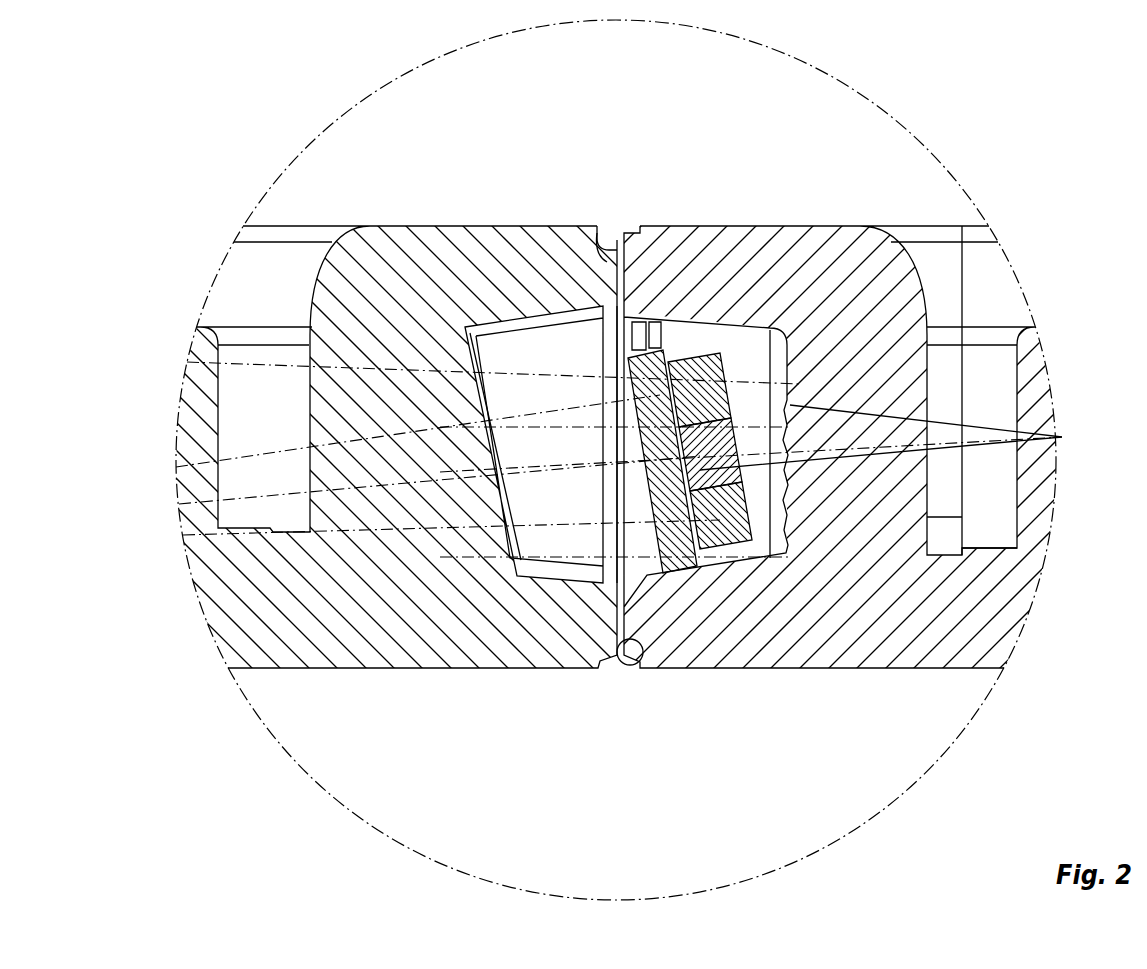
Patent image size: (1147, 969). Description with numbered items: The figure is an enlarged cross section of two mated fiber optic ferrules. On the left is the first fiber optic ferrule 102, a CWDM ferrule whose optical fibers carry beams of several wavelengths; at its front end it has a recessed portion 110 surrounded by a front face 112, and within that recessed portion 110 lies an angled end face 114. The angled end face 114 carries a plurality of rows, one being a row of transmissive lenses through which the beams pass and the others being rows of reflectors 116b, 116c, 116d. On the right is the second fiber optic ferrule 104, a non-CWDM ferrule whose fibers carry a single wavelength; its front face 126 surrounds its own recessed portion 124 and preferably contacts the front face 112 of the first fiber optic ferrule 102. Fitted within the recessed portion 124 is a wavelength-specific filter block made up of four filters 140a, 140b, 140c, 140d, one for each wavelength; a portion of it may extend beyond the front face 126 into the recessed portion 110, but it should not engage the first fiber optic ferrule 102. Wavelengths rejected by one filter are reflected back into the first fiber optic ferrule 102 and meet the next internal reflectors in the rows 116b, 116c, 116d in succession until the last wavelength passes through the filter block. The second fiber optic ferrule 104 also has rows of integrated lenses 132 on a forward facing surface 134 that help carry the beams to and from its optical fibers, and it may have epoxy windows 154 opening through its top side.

The first fiber optic ferrule 102 is at (447, 670).
The second fiber optic ferrule 104 is at (902, 670).
The recessed portion 110 is at (540, 348).
The front face 112 is at (596, 232).
The angled end face 114 is at (460, 322).
The row of reflectors 116b is at (176, 467).
The row of reflectors 116c is at (179, 504).
The row of reflectors 116d is at (183, 535).
The recessed portion 124 is at (1017, 549).
The front face 126 is at (643, 668).
The integrated lenses 132 is at (1062, 437).
The forward facing surface 134 is at (772, 340).
The filter 140a is at (666, 352).
The filter 140b is at (745, 392).
The filter 140c is at (770, 481).
The filter 140d is at (747, 553).
The epoxy window 154 is at (932, 268).